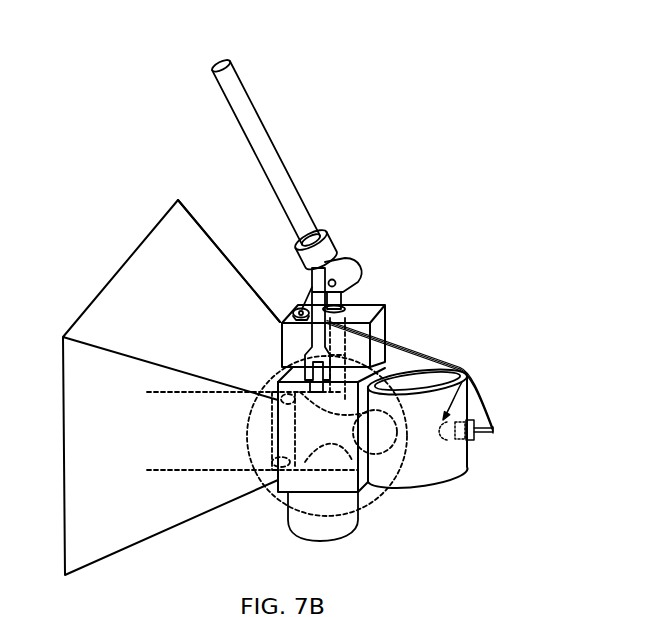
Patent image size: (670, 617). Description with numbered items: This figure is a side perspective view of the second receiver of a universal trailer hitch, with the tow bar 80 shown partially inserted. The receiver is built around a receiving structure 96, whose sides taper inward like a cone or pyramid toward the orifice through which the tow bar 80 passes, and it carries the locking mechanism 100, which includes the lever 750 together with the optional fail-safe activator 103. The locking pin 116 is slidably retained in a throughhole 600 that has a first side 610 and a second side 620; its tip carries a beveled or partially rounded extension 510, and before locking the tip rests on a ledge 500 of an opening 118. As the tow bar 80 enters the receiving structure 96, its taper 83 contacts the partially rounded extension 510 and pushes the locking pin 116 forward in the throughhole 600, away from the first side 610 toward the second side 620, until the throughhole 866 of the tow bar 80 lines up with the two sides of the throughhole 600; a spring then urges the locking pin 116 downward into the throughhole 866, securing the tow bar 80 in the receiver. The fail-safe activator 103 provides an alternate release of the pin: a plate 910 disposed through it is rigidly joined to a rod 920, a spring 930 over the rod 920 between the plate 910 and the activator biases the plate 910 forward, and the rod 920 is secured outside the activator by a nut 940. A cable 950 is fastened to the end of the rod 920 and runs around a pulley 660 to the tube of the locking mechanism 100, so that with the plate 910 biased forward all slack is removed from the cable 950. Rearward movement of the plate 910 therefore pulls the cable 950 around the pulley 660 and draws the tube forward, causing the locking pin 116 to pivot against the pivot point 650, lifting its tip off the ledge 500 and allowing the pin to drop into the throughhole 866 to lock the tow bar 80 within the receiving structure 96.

The locking mechanism 100 is at (442, 133).
The tow bar 80 is at (197, 432).
The taper 83 is at (321, 410).
The receiving structure 96 is at (118, 267).
The throughhole 866 is at (280, 373).
The first side 610 is at (280, 340).
The pulley 660 is at (293, 313).
The pivot point 650 is at (330, 280).
The lever 750 is at (255, 132).
The second side 620 is at (363, 303).
The throughhole 600 is at (350, 348).
The ledge 500 is at (340, 363).
The locking pin 116 is at (372, 316).
The opening 118 is at (355, 372).
The cable 950 is at (462, 367).
The partially rounded extension 510 is at (462, 370).
The plate 910 is at (472, 377).
The rod 920 is at (450, 447).
The spring 930 is at (460, 443).
The nut 940 is at (467, 443).
The fail-safe activator 103 is at (427, 458).